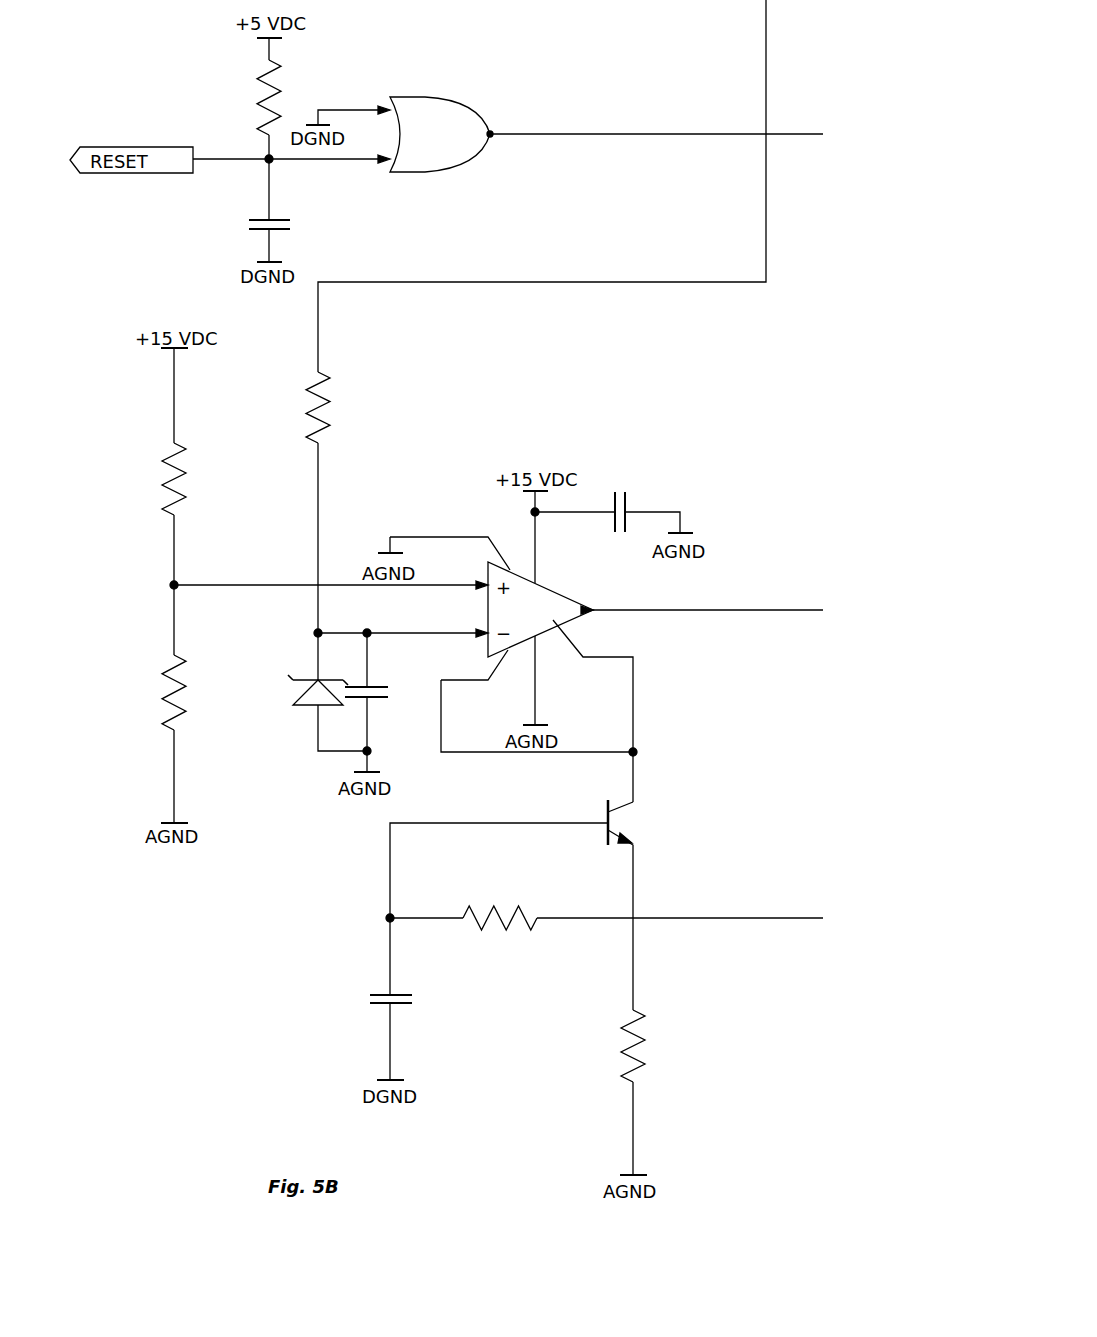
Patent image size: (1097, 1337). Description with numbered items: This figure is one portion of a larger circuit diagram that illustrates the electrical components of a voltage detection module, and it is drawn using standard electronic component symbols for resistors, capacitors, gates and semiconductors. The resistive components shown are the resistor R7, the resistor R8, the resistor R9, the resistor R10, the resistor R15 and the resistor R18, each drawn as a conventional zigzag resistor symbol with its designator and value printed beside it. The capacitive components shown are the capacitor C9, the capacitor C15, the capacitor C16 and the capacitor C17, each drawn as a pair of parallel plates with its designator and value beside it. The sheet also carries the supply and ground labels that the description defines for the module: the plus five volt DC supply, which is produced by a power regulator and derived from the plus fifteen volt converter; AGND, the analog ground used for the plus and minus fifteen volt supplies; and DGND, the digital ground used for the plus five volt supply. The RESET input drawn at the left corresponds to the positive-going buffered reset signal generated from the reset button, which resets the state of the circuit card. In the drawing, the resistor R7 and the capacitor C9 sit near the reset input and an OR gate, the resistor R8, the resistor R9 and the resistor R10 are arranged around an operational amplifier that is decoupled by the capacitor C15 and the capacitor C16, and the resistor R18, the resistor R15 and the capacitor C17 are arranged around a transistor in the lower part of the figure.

The resistor R7 100K R7 is at (241, 98).
The capacitor C9 1 uF C9 is at (243, 210).
The resistor R8 100K (0.1%) R8 is at (206, 514).
The resistor R9 3.01K (0.1%) R9 is at (207, 704).
The resistor R10 10K R10 is at (290, 502).
The capacitor C15 1 uF C15 is at (387, 702).
The capacitor C16 0.1 uF C16 is at (607, 515).
The capacitor C17 0.1 uF C17 is at (362, 1022).
The resistor R18 1K R18 is at (606, 918).
The resistor R15 1K R15 is at (607, 1046).